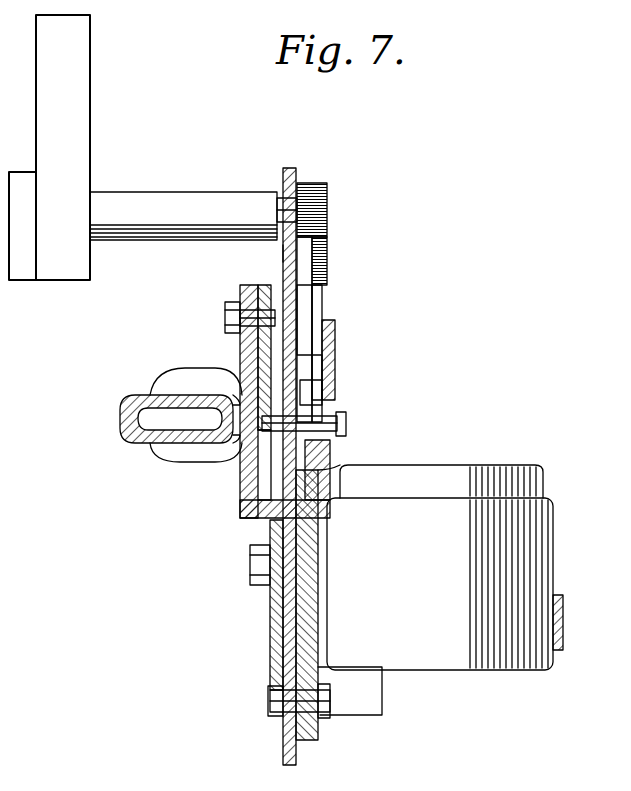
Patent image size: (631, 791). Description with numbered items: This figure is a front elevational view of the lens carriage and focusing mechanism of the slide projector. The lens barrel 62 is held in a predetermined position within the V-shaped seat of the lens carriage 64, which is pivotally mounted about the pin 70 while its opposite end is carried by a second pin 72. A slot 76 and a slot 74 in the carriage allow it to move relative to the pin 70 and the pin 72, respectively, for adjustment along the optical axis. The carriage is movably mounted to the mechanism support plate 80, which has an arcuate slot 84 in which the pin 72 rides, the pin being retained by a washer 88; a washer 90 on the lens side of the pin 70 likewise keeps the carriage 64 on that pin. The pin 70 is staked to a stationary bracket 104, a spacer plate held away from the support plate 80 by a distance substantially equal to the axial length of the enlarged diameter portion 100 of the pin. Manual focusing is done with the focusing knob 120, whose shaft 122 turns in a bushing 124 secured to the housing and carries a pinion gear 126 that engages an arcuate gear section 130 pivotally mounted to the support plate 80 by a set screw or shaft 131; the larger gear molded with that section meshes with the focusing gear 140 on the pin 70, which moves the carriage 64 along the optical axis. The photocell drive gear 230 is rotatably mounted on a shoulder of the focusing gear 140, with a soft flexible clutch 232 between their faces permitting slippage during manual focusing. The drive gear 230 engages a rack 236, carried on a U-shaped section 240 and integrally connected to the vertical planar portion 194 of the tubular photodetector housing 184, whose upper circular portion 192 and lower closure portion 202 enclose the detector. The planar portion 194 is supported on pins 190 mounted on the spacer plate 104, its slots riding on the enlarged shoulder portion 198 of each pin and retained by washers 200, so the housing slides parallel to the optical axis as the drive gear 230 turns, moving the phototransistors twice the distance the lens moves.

The focusing knob 120 is at (65, 47).
The bushing 124 is at (136, 192).
The shaft 122 is at (283, 198).
The mechanism support plate 80 is at (296, 172).
The pinion gear 126 is at (327, 200).
The arcuate gear section 130 is at (327, 252).
The set screw or shaft 131 is at (283, 253).
The stationary bracket 104 is at (240, 350).
The pins 190 is at (262, 300).
The washers 200 is at (236, 306).
The enlarged shoulder portion 198 is at (235, 320).
The photocell drive gear 230 is at (303, 385).
The slot 76 is at (334, 340).
The clutch 232 is at (318, 382).
The focusing gear 140 is at (322, 406).
The washer 90 is at (346, 414).
The pin 70 is at (346, 428).
The upper circular portion 192 is at (120, 410).
The lower housing or closure portion 202 is at (160, 445).
The tubular housing 184 is at (118, 451).
The vertical planar portion 194 is at (240, 470).
The enlarged diameter portion 100 is at (243, 500).
The rack 236 is at (245, 518).
The U-shaped section 240 is at (250, 558).
The arcuate slot 84 is at (283, 684).
The slot 74 is at (302, 646).
The lens barrel 62 is at (442, 547).
The lens carriage 64 is at (342, 470).
The second pin 72 is at (320, 700).
The washer 88 is at (325, 724).